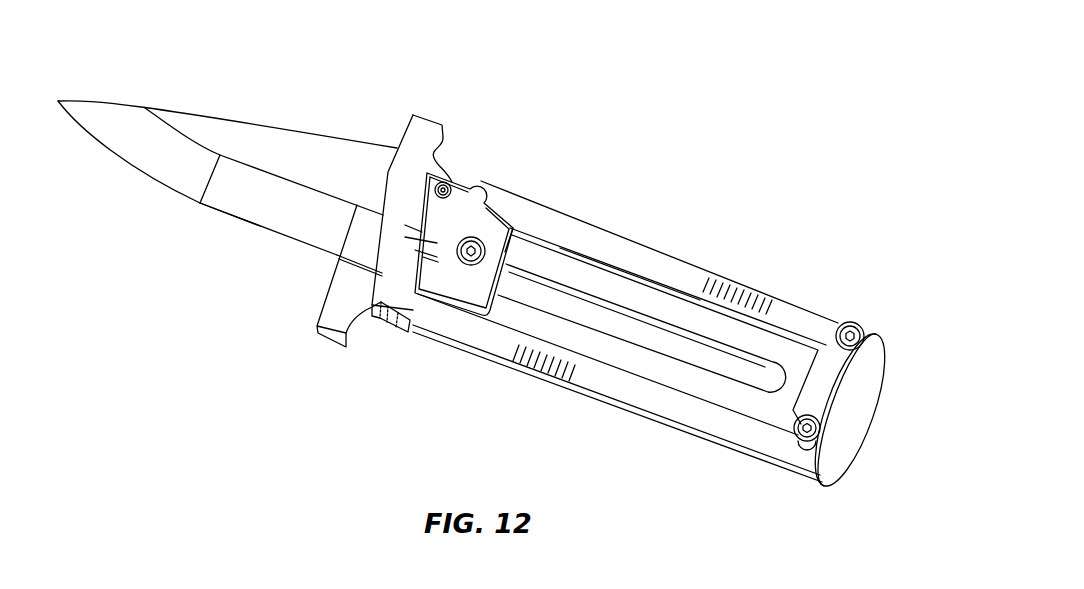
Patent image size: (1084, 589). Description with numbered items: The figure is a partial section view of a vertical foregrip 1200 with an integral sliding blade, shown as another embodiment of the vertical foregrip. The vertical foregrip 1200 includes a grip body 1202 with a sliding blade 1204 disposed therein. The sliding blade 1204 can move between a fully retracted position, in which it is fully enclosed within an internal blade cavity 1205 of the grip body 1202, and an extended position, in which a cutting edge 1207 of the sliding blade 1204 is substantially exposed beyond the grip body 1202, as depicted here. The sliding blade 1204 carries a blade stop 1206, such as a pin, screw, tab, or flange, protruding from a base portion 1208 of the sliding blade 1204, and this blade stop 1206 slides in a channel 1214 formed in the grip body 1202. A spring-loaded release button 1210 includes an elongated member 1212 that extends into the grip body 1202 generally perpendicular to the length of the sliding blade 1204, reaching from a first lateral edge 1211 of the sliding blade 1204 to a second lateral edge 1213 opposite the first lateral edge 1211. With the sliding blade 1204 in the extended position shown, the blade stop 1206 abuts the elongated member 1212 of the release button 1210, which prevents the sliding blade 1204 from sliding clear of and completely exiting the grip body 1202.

The vertical foregrip 1200 is at (668, 92).
The grip body 1202 is at (718, 288).
The sliding blade 1204 is at (264, 147).
The internal blade cavity 1205 is at (640, 297).
The blade stop 1206 is at (506, 241).
The cutting edge 1207 is at (245, 224).
The base portion 1208 is at (514, 229).
The spring-loaded release button 1210 is at (390, 323).
The first lateral edge 1211 is at (447, 305).
The elongated member 1212 is at (440, 218).
The second lateral edge 1213 is at (480, 237).
The channel 1214 is at (538, 293).